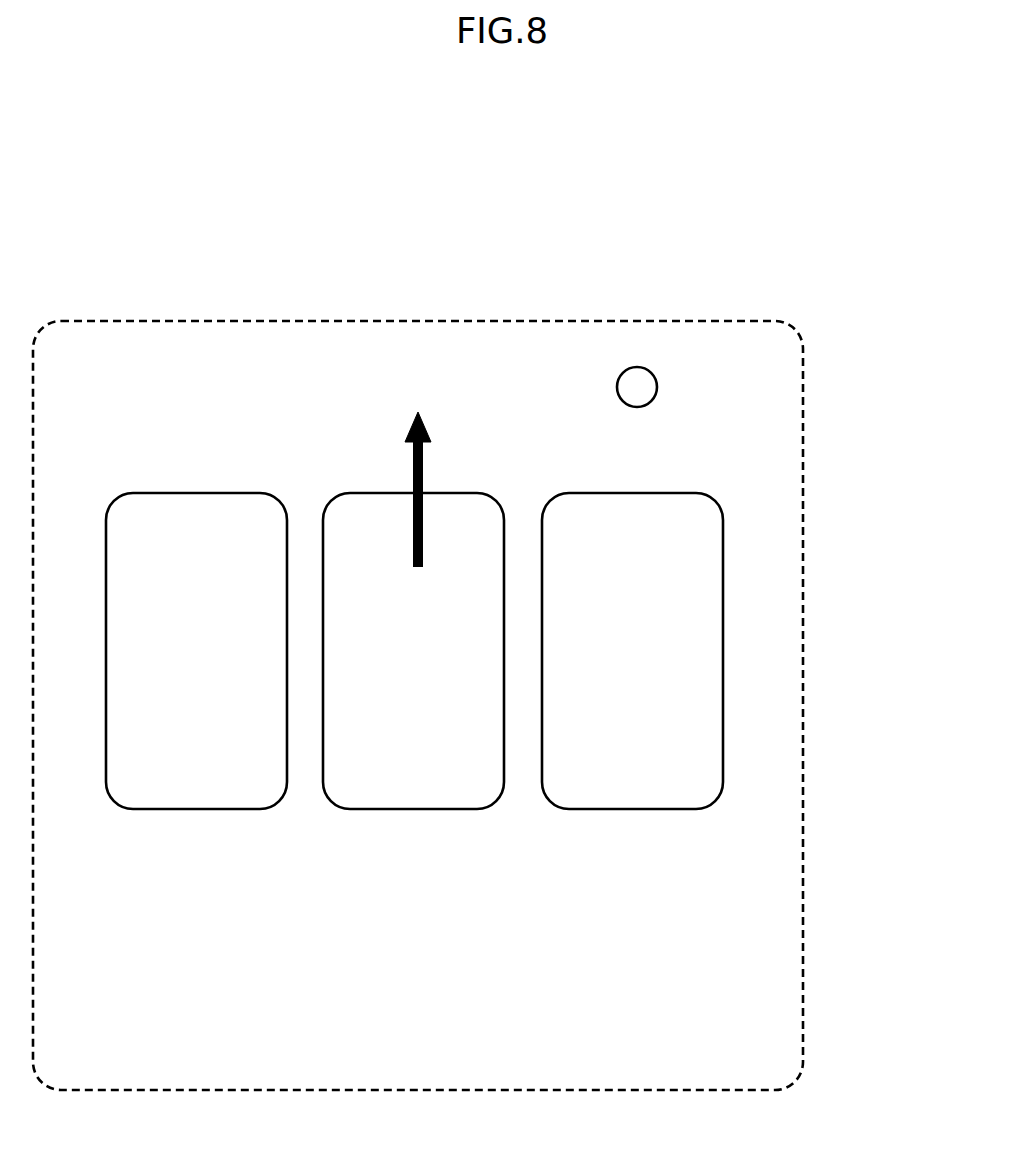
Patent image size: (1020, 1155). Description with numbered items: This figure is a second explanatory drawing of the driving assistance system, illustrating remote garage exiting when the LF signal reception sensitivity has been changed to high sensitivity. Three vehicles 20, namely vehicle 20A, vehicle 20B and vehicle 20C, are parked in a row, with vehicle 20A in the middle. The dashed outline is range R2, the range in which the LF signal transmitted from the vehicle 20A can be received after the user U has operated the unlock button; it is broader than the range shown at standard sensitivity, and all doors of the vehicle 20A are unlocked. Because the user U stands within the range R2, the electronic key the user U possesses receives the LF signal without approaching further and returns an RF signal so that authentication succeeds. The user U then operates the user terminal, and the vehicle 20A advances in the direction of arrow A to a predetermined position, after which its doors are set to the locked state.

The range R2 is at (803, 620).
The vehicle 20 is at (414, 696).
The vehicle 20A is at (417, 809).
The vehicle 20B is at (195, 809).
The vehicle 20C is at (638, 809).
The arrow A is at (410, 427).
The user U is at (637, 366).